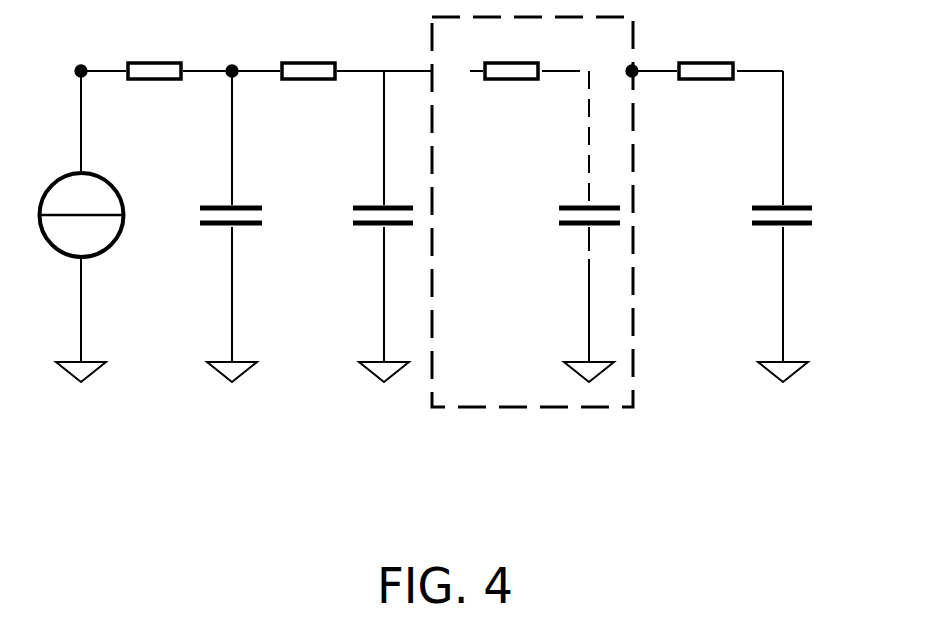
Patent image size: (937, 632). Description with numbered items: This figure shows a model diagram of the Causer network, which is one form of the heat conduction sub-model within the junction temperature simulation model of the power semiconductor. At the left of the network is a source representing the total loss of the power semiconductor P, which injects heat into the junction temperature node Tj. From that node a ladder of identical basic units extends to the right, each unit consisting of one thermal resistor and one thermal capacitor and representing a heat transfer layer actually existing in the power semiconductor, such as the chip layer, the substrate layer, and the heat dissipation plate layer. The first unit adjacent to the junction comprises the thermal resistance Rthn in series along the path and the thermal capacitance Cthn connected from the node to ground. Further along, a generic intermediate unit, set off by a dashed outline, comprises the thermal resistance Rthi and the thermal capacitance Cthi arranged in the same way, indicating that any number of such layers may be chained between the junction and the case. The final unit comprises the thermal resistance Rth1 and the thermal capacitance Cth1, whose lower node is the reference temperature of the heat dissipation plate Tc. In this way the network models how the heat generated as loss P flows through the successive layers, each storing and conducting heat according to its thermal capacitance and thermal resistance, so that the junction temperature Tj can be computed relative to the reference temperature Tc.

The junction temperature Tj is at (66, 60).
The total loss of the power semiconductor P is at (69, 226).
The thermal resistance Rthn is at (154, 49).
The thermal capacitance Cthn is at (247, 223).
The thermal resistance Rthi is at (512, 52).
The thermal capacitance Cthi is at (564, 226).
The thermal resistance Rth1 is at (679, 53).
The thermal capacitance Cth1 is at (800, 216).
The reference temperature of the heat dissipation plate Tc is at (785, 349).